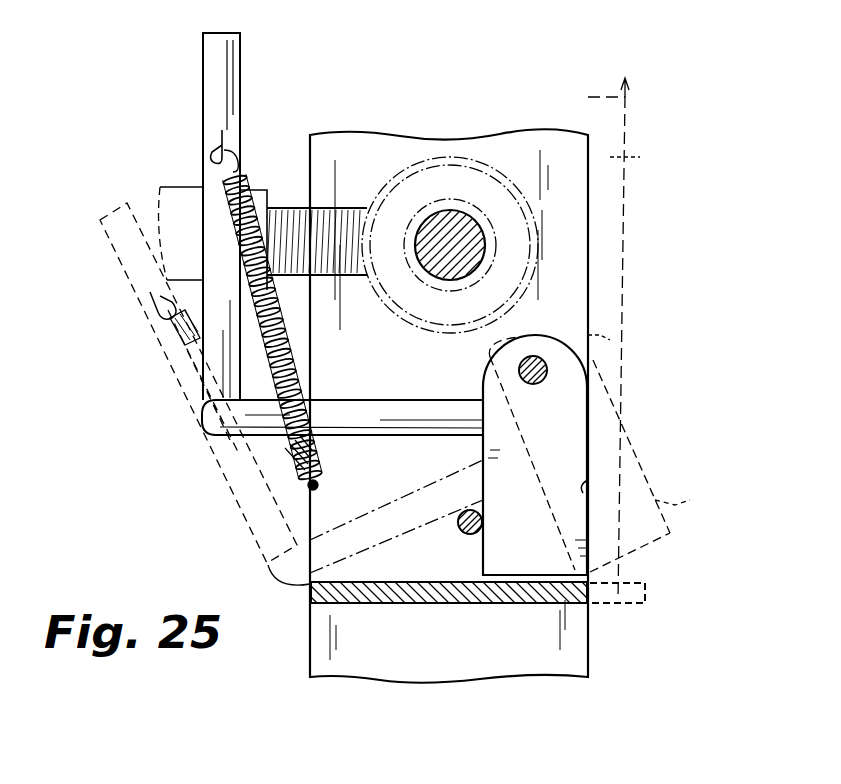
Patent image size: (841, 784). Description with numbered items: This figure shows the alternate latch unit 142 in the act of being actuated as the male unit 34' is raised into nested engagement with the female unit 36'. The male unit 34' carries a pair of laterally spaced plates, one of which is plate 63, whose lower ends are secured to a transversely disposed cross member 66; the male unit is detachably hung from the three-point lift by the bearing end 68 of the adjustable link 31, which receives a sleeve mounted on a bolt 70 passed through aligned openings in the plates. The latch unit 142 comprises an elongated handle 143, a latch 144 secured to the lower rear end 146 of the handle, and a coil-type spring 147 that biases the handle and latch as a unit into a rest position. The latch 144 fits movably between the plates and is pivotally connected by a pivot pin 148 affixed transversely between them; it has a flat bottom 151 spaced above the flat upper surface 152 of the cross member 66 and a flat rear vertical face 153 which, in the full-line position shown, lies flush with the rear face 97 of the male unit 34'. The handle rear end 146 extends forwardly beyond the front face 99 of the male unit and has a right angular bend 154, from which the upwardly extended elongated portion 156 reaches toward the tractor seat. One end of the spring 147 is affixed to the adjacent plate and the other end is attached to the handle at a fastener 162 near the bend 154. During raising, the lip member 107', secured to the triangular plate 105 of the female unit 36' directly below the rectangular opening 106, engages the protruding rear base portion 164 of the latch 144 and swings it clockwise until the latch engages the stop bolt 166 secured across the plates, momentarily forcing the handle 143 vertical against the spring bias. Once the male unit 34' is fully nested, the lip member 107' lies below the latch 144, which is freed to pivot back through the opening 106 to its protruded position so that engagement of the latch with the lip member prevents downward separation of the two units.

The adjustable link 31 is at (180, 177).
The male unit 34' is at (434, 64).
The female unit 36' is at (648, 321).
The plate 63 is at (352, 147).
The cross member 66 is at (322, 600).
The bearing end 68 is at (470, 188).
The bolt 70 is at (440, 232).
The rear face 97 is at (588, 245).
The front face 99 is at (308, 650).
The triangular plate 105 is at (645, 155).
The rectangular opening 106 is at (625, 340).
The lip member 107' is at (664, 596).
The latch unit 142 is at (268, 70).
The handle 143 is at (218, 60).
The latch 144 is at (560, 412).
The lower rear end 146 is at (393, 400).
The spring 147 is at (245, 172).
The pivot pin 148 is at (548, 370).
The flat bottom 151 is at (488, 603).
The flat upper surface 152 is at (410, 603).
The rear vertical face 153 is at (590, 490).
The right angular bend 154 is at (205, 415).
The elongated portion 156 is at (100, 248).
The fastener 162 is at (221, 135).
The rear base portion 164 is at (680, 505).
The stop bolt 166 is at (448, 535).